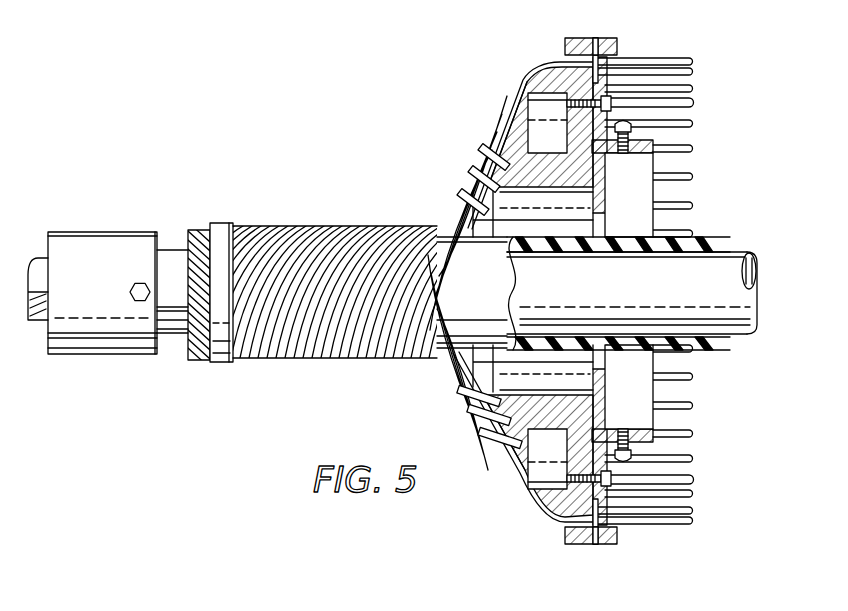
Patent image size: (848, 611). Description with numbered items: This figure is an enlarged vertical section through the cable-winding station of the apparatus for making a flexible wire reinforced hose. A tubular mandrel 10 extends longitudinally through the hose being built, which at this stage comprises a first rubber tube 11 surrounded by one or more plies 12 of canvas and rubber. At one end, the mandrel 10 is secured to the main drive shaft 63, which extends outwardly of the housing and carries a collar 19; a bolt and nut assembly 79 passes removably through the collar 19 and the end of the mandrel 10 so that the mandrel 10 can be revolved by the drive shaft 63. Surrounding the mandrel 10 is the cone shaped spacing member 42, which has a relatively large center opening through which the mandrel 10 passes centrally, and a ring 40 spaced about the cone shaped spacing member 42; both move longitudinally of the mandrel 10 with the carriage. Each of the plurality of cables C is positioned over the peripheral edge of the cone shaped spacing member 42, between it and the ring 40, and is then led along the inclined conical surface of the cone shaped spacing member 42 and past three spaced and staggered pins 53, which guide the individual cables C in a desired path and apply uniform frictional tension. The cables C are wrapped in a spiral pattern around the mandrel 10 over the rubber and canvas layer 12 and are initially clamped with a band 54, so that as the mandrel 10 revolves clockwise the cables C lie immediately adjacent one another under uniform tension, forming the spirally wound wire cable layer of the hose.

The tubular mandrel 10 is at (174, 333).
The first rubber tube 11 is at (734, 250).
The plies of canvas and rubber 12 is at (730, 238).
The collar 19 is at (112, 352).
The ring 40 is at (614, 38).
The cone shaped spacing member 42 is at (545, 503).
The pins 53 is at (466, 200).
The band 54 is at (219, 224).
The main drive shaft 63 is at (40, 323).
The bolt and nut assembly 79 is at (132, 288).
The cables C is at (296, 358).